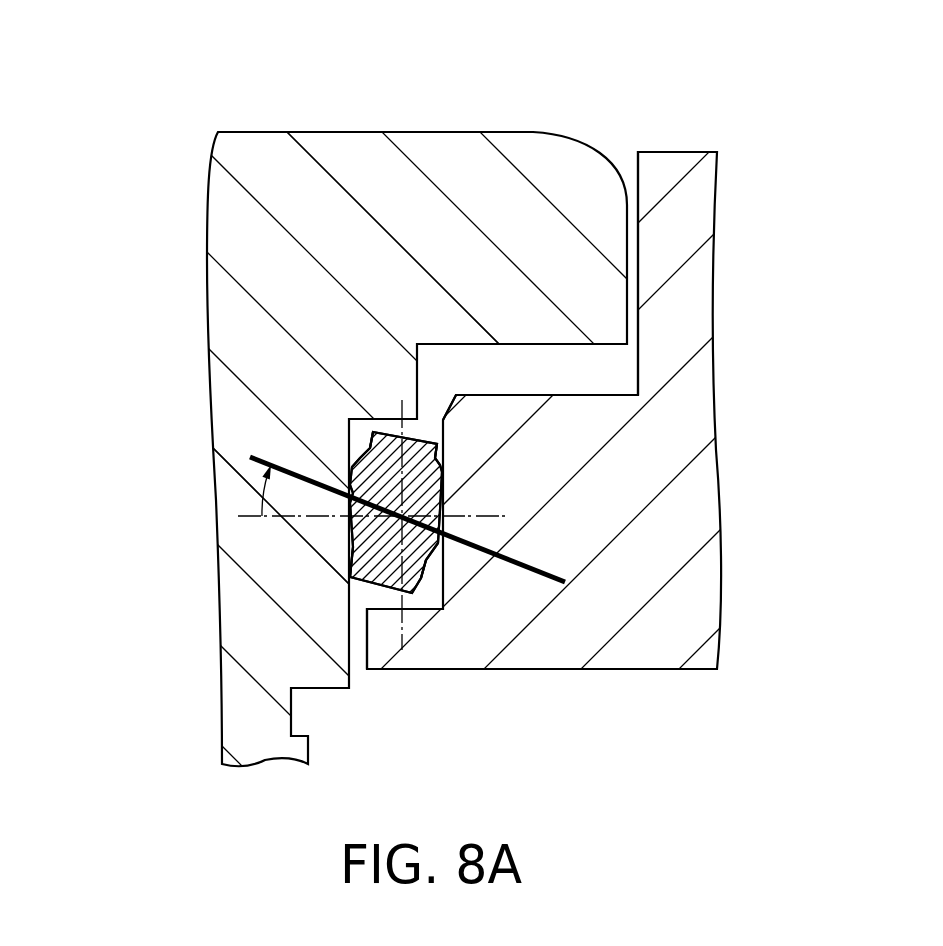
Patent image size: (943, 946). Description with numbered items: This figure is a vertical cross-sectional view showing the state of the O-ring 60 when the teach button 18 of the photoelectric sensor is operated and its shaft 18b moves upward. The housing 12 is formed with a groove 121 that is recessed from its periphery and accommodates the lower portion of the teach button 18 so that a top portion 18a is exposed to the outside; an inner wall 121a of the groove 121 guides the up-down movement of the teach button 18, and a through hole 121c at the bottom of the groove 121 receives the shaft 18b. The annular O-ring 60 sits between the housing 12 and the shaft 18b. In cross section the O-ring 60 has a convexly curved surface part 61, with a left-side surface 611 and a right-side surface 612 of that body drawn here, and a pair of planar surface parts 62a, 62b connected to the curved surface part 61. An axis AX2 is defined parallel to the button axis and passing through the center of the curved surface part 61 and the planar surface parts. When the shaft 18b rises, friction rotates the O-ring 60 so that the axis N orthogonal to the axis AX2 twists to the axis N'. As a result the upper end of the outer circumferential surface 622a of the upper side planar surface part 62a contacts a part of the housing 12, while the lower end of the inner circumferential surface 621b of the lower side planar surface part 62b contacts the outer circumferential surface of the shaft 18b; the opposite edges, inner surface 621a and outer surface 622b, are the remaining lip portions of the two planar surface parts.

The teach button 18 is at (298, 124).
The top portion 18a is at (360, 221).
The shaft 18b is at (278, 553).
The housing 12 is at (635, 533).
The groove 121 is at (596, 360).
The inner wall 121a is at (542, 395).
The through hole 121c is at (367, 640).
The O-ring 60 is at (440, 465).
The curved surface part 61 is at (350, 532).
The first side surface of seal body 611 is at (370, 447).
The second side surface of seal body 612 is at (440, 505).
The upper side planar surface part 62a is at (384, 428).
The lower side planar surface part 62b is at (376, 595).
The first lip portion (upper left) 621a is at (352, 467).
The inner circumferential surface 621b is at (350, 574).
The outer circumferential surface 622a is at (440, 460).
The second lip portion (lower right) 622b is at (424, 578).
The axis AX2 is at (403, 402).
The axis N is at (327, 482).
The axis N' is at (349, 481).